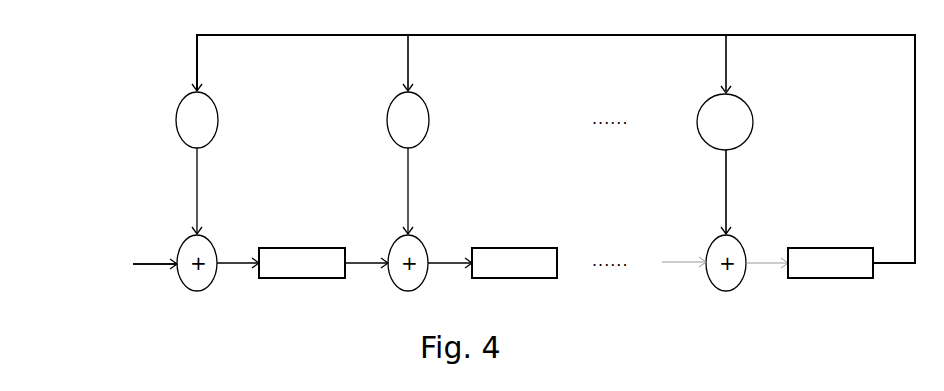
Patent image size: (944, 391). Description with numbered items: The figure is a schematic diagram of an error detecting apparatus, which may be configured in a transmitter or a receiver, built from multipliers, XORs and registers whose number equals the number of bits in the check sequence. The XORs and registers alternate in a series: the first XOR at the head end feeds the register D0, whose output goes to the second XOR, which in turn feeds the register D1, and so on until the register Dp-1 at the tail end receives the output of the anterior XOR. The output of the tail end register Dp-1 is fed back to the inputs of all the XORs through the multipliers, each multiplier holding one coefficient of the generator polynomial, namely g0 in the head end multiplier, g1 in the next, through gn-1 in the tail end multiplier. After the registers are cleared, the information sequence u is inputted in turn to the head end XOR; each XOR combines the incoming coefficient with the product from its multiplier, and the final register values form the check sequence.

The generator polynomial coefficient g0 is at (197, 120).
The generator polynomial coefficient g1 is at (408, 120).
The generator polynomial coefficient gn-1 is at (725, 125).
The register D0 is at (302, 264).
The register D1 is at (514, 264).
The register Dp-1 is at (830, 264).
The information sequence u is at (108, 265).